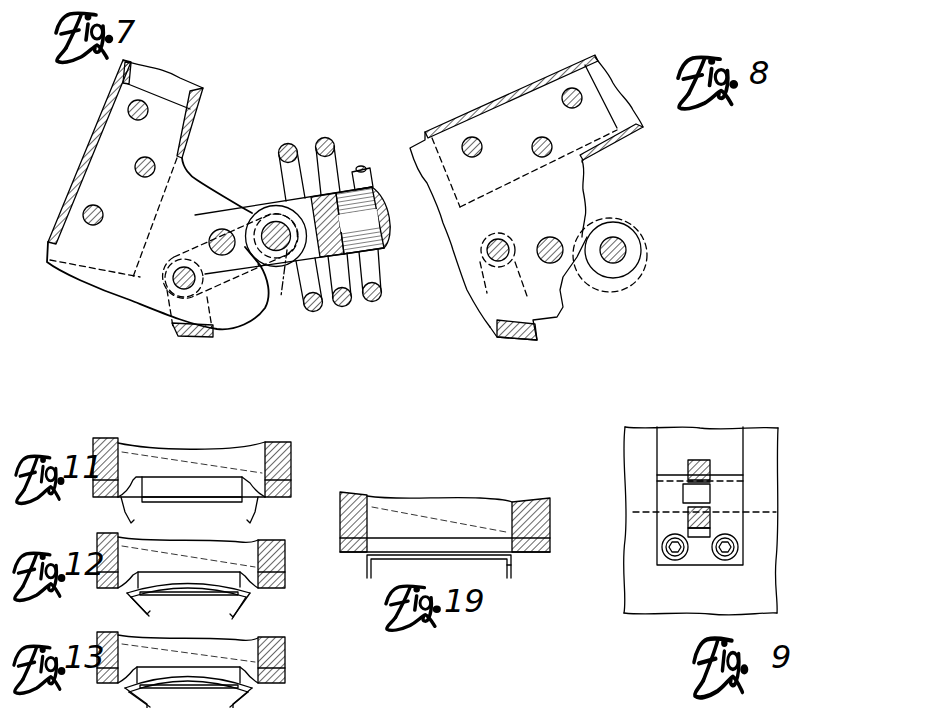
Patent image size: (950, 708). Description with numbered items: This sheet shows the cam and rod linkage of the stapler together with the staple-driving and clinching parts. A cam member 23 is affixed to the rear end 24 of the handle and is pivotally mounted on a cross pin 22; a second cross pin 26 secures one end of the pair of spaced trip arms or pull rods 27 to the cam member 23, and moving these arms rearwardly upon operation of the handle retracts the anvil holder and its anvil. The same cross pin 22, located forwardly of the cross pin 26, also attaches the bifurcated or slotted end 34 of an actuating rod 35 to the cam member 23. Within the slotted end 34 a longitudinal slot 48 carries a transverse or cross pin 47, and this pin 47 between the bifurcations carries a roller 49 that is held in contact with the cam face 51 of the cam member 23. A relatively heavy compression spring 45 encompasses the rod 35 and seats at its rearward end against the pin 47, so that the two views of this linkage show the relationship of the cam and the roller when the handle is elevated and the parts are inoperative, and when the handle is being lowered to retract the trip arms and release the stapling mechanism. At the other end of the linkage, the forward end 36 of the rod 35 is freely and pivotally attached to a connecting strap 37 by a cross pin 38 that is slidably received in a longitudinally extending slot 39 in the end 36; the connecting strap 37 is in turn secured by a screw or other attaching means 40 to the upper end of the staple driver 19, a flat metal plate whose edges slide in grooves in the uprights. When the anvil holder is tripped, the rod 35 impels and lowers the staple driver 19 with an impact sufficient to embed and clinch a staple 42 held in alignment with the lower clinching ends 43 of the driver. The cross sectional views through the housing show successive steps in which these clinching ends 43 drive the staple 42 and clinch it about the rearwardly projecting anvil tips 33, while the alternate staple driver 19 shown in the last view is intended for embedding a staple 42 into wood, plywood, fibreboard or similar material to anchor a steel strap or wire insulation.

In FIG. 11, the staple driver 19 is at (249, 453).
In FIG. 13, the staple driver 19 is at (232, 643).
In FIG. 9, the staple driver 19 is at (768, 441).
In FIG. 7, the cross pin 22 is at (226, 256).
In FIG. 8, the cross pin 22 is at (549, 260).
In FIG. 7, the cam member 23 is at (201, 180).
In FIG. 8, the cam member 23 is at (560, 196).
In FIG. 7, the rear end of handle 24 is at (82, 164).
In FIG. 7, the cross pin 26 is at (177, 280).
In FIG. 8, the cross pin 26 is at (493, 254).
In FIG. 7, the trip arms or pull rods 27 is at (178, 331).
In FIG. 11, the anvil tips 33 is at (197, 502).
In FIG. 12, the anvil tips 33 is at (178, 597).
In FIG. 13, the anvil tips 33 is at (178, 690).
In FIG. 7, the bifurcated or slotted end of actuating rod 34 is at (259, 266).
In FIG. 7, the actuating rod 35 is at (370, 192).
In FIG. 9, the forward end of actuating rod 36 is at (700, 458).
In FIG. 9, the connecting strap 37 is at (700, 563).
In FIG. 9, the cross pin 38 is at (698, 490).
In FIG. 9, the longitudinally extending slot 39 is at (708, 478).
In FIG. 9, the screw or attaching means 40 is at (673, 560).
In FIG. 11, the staple 42 is at (262, 499).
In FIG. 19, the staple 42 is at (439, 552).
In FIG. 11, the lower clinching ends of staple driver 43 is at (120, 493).
In FIG. 12, the lower clinching ends of staple driver 43 is at (132, 584).
In FIG. 13, the lower clinching ends of staple driver 43 is at (127, 681).
In FIG. 19, the lower clinching ends of staple driver 43 is at (514, 576).
In FIG. 7, the compression spring 45 is at (319, 142).
In FIG. 7, the transverse or cross pin 47 is at (278, 222).
In FIG. 8, the transverse or cross pin 47 is at (620, 242).
In FIG. 7, the longitudinal slot 48 is at (292, 251).
In FIG. 7, the roller 49 is at (254, 212).
In FIG. 8, the roller 49 is at (643, 261).
In FIG. 7, the cam face 51 is at (248, 212).
In FIG. 8, the cam face 51 is at (583, 216).